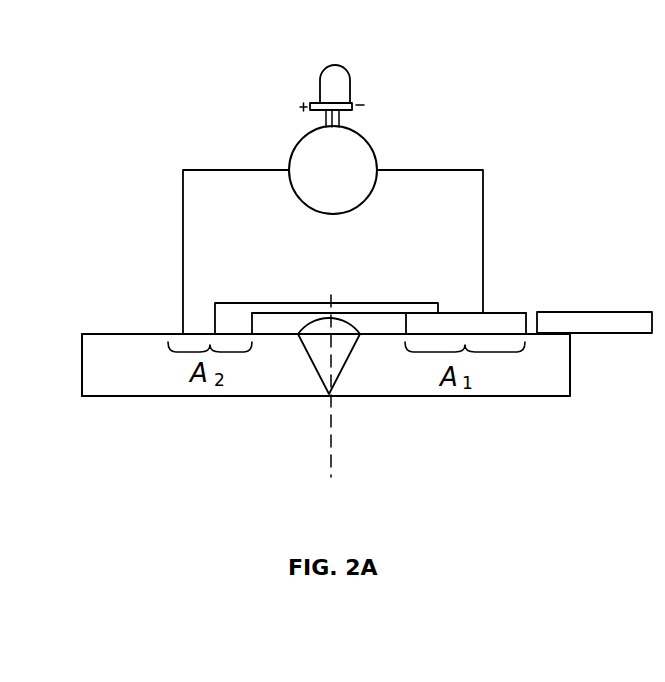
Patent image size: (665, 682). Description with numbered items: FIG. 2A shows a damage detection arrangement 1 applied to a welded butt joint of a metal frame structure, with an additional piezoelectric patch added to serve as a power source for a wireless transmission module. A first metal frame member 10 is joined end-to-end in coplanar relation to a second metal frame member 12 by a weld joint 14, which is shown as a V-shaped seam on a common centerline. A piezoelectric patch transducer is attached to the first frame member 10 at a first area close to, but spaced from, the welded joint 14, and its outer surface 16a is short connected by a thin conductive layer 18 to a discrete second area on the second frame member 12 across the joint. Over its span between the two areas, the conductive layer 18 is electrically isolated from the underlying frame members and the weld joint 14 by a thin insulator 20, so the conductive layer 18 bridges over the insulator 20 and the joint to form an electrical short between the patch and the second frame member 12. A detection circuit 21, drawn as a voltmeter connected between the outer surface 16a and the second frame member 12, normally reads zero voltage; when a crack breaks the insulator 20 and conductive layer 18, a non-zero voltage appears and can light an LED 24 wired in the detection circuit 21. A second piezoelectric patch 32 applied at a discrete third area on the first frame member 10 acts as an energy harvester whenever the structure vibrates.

The sensor device 1 is at (114, 360).
The first metal frame member 10 is at (525, 387).
The second metal frame member 12 is at (143, 385).
The weld joint 14 is at (322, 367).
The outer surface of the piezoelectric layer 16a is at (498, 308).
The conductive layer 18 is at (383, 308).
The insulator 20 is at (270, 322).
The detection circuit 21 is at (385, 166).
The LED 24 is at (352, 63).
The second piezoelectric patch 32 is at (577, 322).